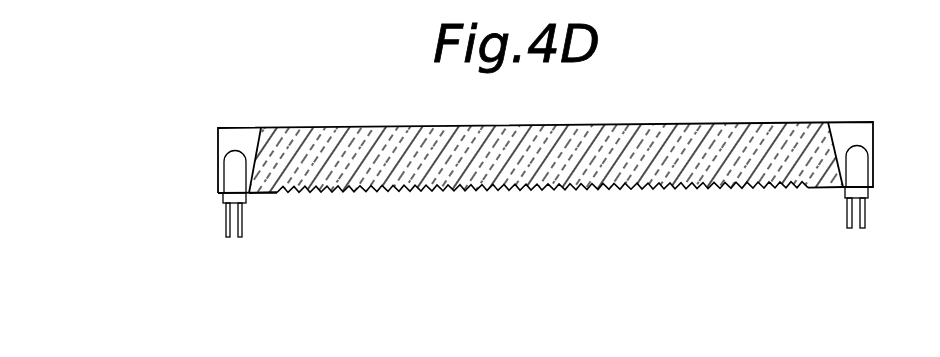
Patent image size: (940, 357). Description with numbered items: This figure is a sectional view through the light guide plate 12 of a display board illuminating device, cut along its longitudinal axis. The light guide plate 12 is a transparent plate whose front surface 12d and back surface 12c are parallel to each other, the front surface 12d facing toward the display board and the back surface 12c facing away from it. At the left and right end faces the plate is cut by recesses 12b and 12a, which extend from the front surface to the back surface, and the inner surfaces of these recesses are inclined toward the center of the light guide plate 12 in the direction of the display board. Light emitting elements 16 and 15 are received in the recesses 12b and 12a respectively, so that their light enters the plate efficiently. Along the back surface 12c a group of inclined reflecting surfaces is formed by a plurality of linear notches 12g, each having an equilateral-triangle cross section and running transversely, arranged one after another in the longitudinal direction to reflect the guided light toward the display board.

The light guide plate 12 is at (782, 122).
The recess 12a is at (837, 122).
The recess 12b is at (250, 127).
The back surface 12c is at (262, 195).
The front surface 12d is at (385, 125).
The linear notches 12g is at (522, 192).
The light emitting element 15 is at (868, 160).
The light emitting element 16 is at (230, 160).